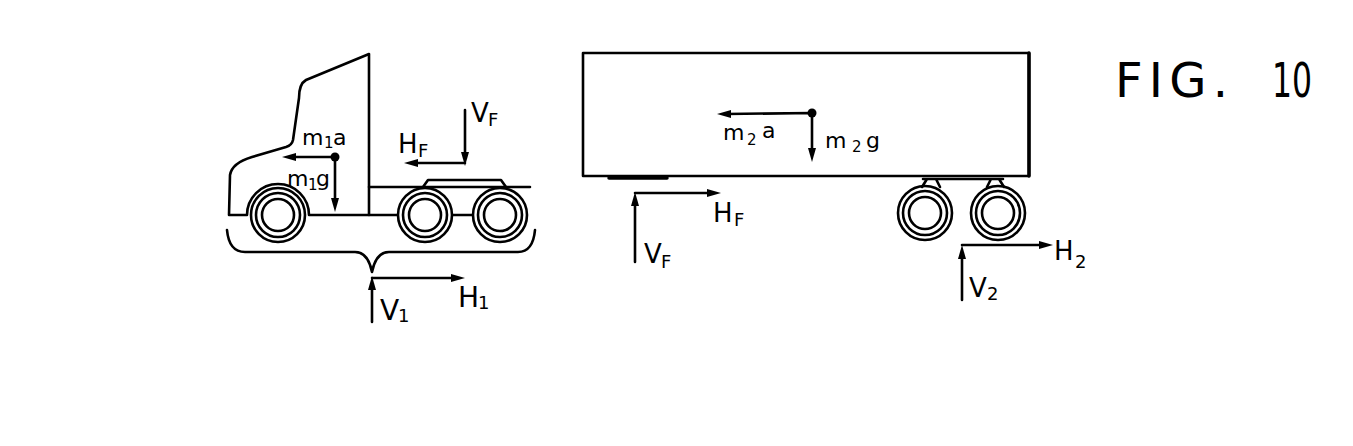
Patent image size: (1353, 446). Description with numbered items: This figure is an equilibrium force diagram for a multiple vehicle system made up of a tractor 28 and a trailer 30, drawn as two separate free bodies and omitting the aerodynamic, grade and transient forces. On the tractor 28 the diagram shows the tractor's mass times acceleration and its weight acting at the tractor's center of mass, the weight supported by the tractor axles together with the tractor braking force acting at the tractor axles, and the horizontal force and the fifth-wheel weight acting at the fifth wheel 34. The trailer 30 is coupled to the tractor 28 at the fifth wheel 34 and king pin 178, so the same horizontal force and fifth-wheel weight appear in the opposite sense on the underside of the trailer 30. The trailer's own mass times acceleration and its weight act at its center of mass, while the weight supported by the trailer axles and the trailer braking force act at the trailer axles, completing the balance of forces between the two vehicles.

The tractor 28 is at (352, 84).
The trailer 30 is at (767, 60).
The fifth wheel 34 is at (492, 184).
The king pin 178 is at (492, 215).